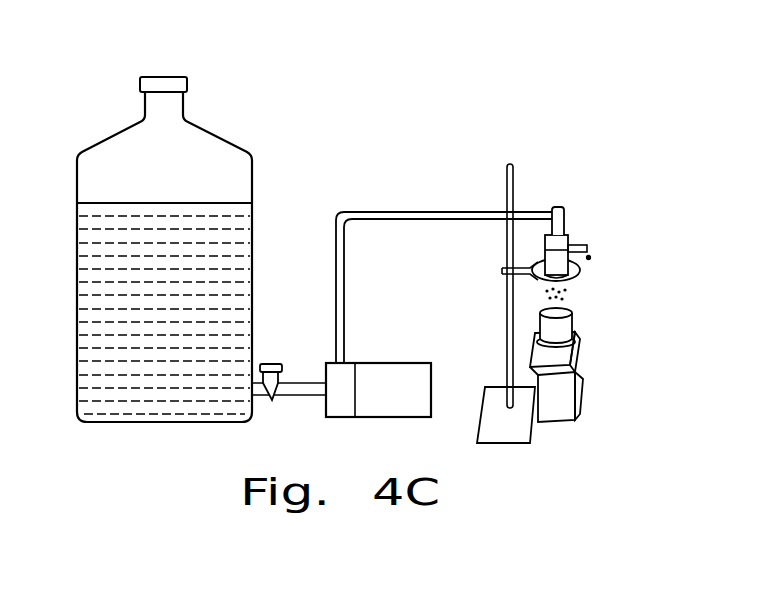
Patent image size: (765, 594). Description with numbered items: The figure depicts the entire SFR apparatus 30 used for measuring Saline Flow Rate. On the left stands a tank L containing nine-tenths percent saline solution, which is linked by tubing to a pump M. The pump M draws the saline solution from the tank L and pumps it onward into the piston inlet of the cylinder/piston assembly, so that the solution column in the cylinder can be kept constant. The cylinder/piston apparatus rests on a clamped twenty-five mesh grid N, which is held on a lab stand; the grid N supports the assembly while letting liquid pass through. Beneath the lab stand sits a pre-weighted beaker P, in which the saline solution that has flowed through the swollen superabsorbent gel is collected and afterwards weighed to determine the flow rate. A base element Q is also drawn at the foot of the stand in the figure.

The SFR apparatus 30 is at (363, 112).
The tank L is at (164, 249).
The pump M is at (378, 390).
The clamped 25 mesh grid N is at (548, 283).
The pre-weighted beaker P is at (573, 323).
The base plate Q is at (506, 415).